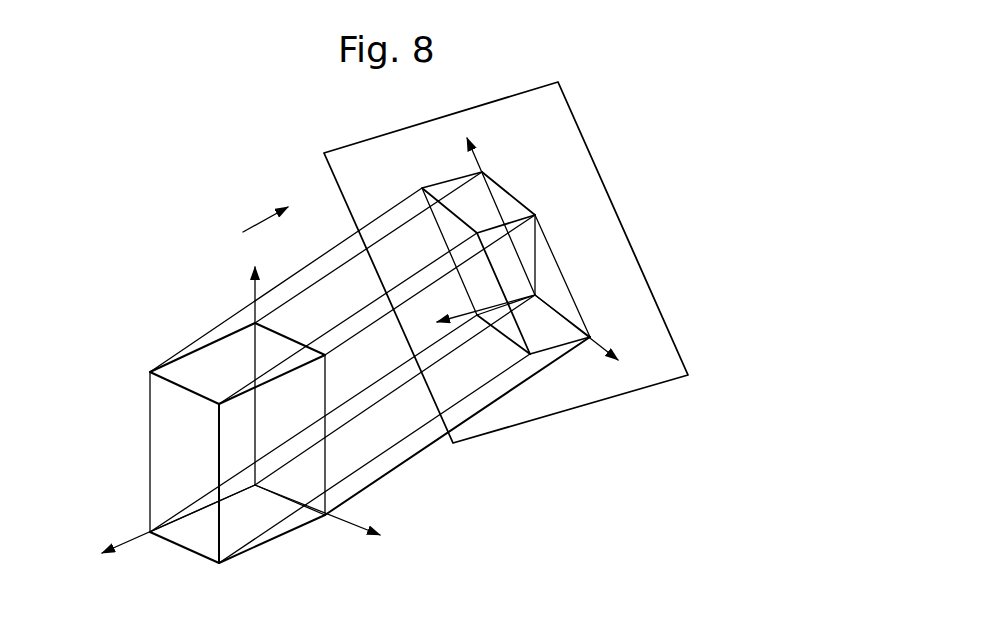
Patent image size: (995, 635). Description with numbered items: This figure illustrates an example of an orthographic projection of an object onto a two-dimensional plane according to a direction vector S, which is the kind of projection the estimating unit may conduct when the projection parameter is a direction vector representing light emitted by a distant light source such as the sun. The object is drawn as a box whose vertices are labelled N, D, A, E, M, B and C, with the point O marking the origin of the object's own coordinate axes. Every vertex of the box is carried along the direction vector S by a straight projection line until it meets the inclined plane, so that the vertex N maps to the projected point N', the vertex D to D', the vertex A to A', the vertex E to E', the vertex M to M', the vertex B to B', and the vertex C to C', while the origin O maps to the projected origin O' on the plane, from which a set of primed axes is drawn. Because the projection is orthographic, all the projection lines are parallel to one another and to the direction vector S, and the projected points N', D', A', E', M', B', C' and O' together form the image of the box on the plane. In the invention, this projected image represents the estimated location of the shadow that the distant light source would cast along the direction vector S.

The direction vector S is at (265, 219).
The cube vertex N is at (276, 360).
The cube vertex D is at (368, 263).
The cube vertex A is at (339, 398).
The cube vertex E is at (430, 365).
The cube vertex M is at (303, 439).
The cube vertex B is at (371, 473).
The cube vertex C is at (455, 441).
The origin O=K with axes x, y, z O is at (311, 407).
The projected vertex N' is at (442, 241).
The projected vertex D' is at (508, 183).
The projected vertex A' is at (503, 278).
The projected vertex E' is at (562, 266).
The projected vertex M' is at (502, 318).
The projected vertex B' is at (543, 352).
The projected vertex C' is at (574, 318).
The projected origin O'=K' with axes x', y', z' O' is at (531, 244).